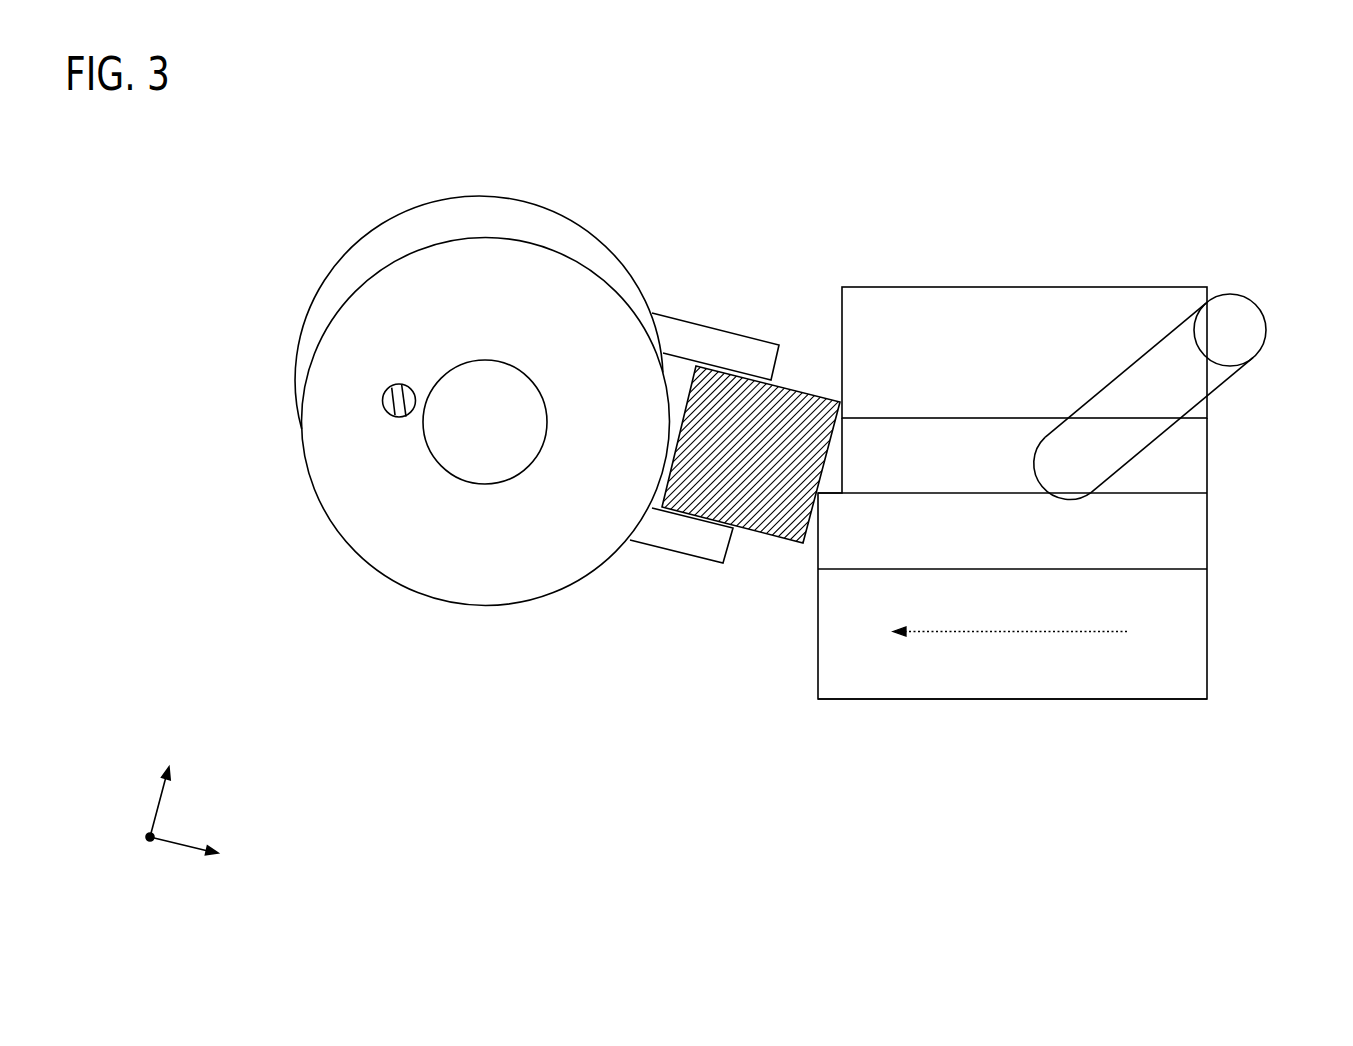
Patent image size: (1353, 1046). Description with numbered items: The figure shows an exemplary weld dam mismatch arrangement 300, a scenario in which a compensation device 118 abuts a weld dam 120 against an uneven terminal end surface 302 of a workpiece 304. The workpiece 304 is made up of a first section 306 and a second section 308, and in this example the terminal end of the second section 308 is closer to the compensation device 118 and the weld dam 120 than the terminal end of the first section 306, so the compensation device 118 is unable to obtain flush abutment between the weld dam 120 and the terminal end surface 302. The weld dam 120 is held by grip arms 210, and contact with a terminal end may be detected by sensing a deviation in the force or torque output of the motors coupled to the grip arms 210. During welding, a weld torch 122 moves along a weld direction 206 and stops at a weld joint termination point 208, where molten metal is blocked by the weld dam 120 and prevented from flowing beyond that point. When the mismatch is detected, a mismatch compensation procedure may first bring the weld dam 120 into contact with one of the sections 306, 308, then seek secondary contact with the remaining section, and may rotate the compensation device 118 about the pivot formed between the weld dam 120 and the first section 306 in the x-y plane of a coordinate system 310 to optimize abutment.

The compensation device 118 is at (548, 150).
The weld dam 120 is at (757, 532).
The weld torch 122 is at (1237, 297).
The weld direction 206 is at (1083, 633).
The weld joint termination point 208 is at (841, 492).
The grip arms 210 is at (709, 297).
The weld dam mismatch arrangement 300 is at (1129, 74).
The terminal end surface 302 is at (785, 633).
The workpiece 304 is at (1282, 495).
The first section 306 is at (891, 287).
The second section 308 is at (1207, 699).
The coordinate system 310 is at (206, 741).